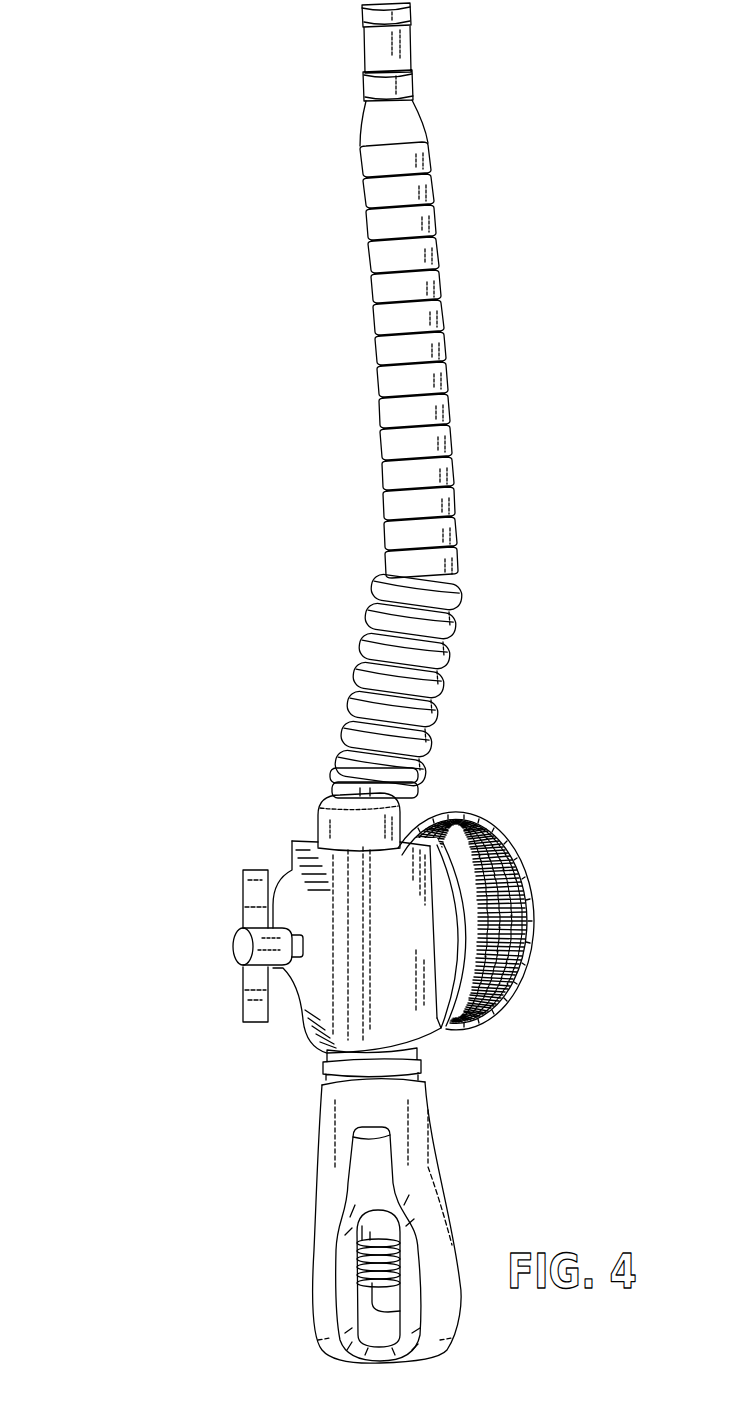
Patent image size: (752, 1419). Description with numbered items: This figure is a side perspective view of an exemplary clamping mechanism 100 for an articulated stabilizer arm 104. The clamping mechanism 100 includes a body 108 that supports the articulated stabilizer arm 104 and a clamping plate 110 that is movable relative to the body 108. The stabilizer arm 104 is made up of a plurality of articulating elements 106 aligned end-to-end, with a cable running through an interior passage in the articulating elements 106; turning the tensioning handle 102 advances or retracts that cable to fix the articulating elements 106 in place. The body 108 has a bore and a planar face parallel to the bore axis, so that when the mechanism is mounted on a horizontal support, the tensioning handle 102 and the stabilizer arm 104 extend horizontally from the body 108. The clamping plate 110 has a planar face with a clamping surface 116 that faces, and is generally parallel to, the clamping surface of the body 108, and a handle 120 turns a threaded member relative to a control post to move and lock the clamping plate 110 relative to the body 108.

The clamping mechanism 100 is at (146, 1071).
The tensioning handle 102 is at (296, 1250).
The articulated stabilizer arm 104 is at (178, 475).
The articulating elements 106 is at (405, 443).
The body 108 is at (310, 1010).
The clamping plate 110 is at (505, 867).
The clamping surface 116 is at (513, 923).
The handle 120 is at (253, 913).